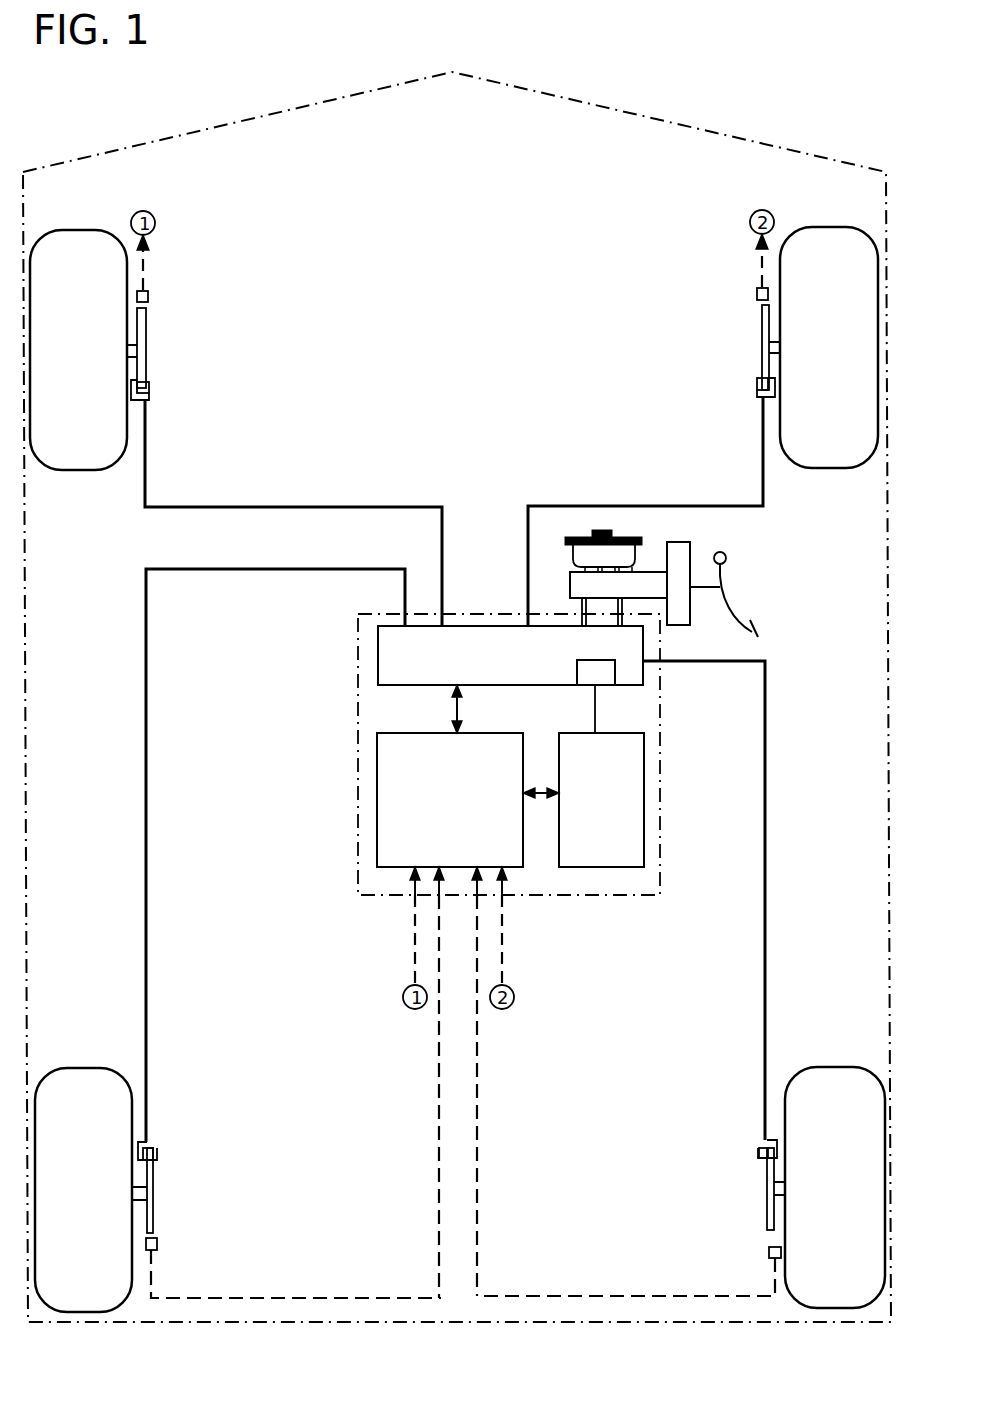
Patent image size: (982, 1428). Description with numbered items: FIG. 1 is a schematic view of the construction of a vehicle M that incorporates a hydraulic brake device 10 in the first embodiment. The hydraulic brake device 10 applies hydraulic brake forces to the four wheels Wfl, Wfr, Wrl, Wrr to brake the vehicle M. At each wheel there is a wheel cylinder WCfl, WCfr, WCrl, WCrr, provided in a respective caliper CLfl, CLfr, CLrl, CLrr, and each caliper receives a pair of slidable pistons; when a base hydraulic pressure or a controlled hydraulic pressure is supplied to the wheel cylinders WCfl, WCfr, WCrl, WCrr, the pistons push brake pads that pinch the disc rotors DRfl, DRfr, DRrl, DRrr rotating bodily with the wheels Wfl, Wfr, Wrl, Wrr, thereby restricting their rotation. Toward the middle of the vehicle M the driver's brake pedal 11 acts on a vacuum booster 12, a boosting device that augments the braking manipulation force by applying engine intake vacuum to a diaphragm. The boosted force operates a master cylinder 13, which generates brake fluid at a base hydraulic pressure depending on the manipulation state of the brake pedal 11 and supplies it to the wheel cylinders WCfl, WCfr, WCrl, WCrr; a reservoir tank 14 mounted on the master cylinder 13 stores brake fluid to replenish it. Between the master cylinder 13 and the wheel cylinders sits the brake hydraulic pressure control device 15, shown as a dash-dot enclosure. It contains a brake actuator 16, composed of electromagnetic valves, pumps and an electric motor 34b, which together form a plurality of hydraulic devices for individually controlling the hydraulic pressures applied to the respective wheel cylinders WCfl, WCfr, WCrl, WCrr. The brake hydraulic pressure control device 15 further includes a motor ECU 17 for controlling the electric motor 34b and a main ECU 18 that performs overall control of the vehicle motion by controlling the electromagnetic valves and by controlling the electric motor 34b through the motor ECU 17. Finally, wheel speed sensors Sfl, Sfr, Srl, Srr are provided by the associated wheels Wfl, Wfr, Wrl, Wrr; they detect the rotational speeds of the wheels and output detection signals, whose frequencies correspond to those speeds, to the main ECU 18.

The vehicle M is at (500, 78).
The front left wheel Wfl is at (78, 230).
The front right wheel Wfr is at (827, 227).
The rear left wheel Wrl is at (88, 1068).
The rear right wheel Wrr is at (832, 1067).
The front left wheel speed sensor Sfl is at (149, 297).
The front right wheel speed sensor Sfr is at (757, 294).
The rear left wheel speed sensor Srl is at (157, 1244).
The rear right wheel speed sensor Srr is at (769, 1252).
The front left disc rotor DRfl is at (147, 333).
The front right disc rotor DRfr is at (762, 330).
The rear left disc rotor DRrl is at (153, 1197).
The rear right disc rotor DRrr is at (767, 1192).
The front left wheel cylinder WCfl is at (150, 388).
The front right wheel cylinder WCfr is at (757, 385).
The rear left wheel cylinder WCrl is at (157, 1153).
The rear right wheel cylinder WCrr is at (758, 1150).
The front left caliper CLfl is at (150, 398).
The front right caliper CLfr is at (757, 397).
The rear left caliper CLrl is at (157, 1143).
The rear right caliper CLrr is at (758, 1143).
The hydraulic brake device 10 is at (485, 729).
The brake pedal 11 is at (730, 600).
The vacuum booster 12 is at (680, 542).
The master cylinder 13 is at (570, 573).
The reservoir tank 14 is at (622, 537).
The brake hydraulic pressure control device 15 is at (485, 612).
The brake actuator 16 is at (430, 686).
The motor ECU 17 is at (645, 780).
The main ECU 18 is at (377, 788).
The electric motor 34b is at (585, 686).